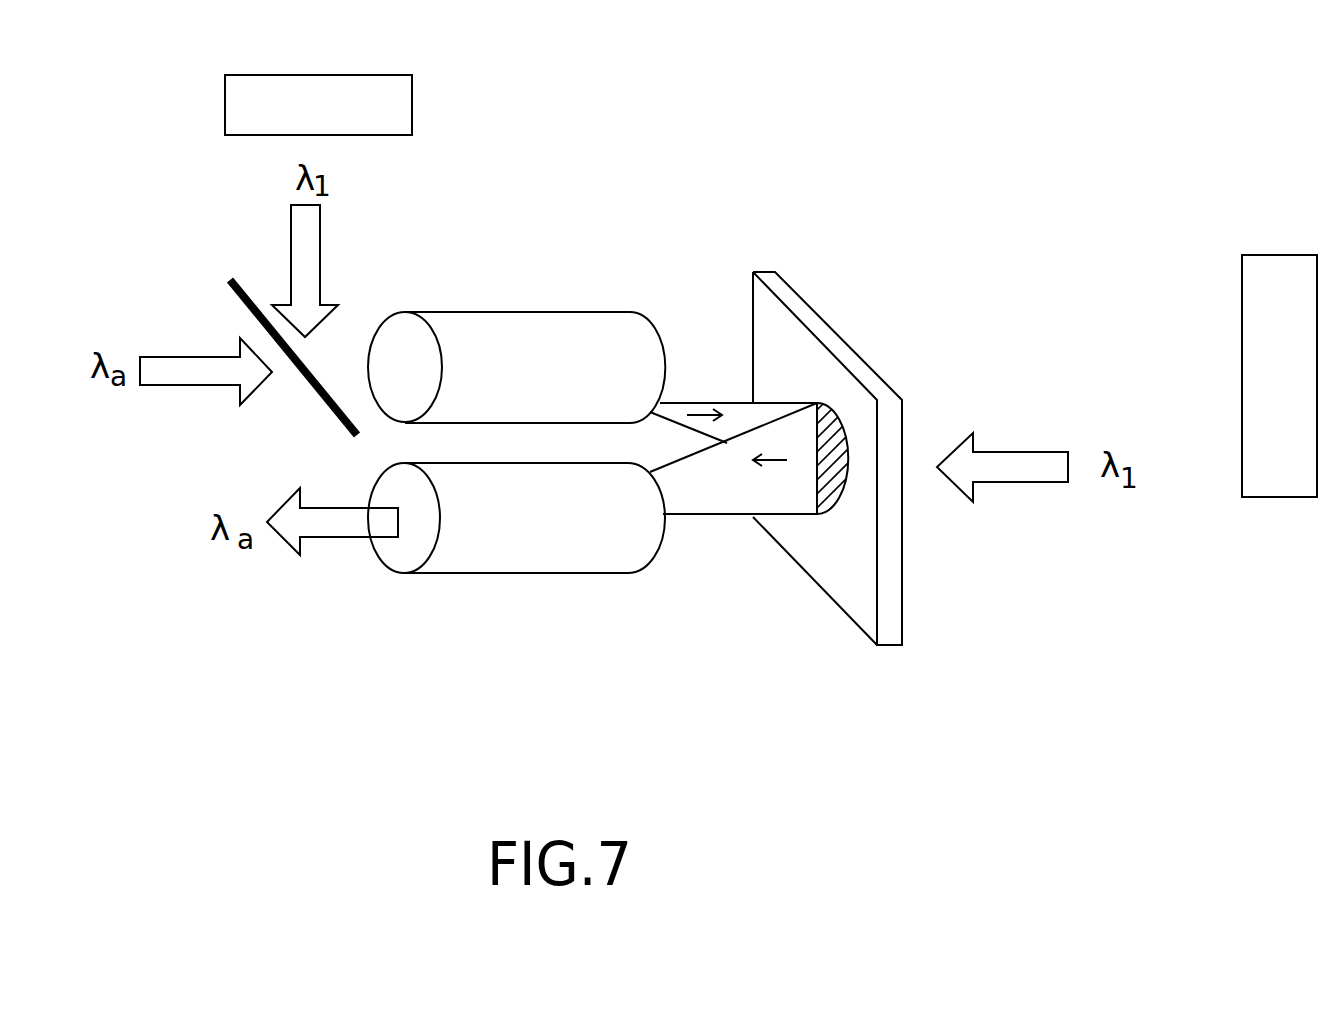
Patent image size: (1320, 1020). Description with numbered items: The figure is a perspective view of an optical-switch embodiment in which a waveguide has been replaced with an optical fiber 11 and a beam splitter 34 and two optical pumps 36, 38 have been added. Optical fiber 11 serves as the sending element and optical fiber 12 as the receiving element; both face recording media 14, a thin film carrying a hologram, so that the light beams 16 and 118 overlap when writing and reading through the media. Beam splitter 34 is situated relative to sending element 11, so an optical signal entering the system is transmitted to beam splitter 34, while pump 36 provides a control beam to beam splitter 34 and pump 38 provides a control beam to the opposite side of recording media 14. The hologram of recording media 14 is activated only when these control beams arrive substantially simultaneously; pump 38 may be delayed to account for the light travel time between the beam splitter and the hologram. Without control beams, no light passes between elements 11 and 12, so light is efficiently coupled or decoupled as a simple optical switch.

The optical fiber 11 is at (517, 317).
The optical fiber 12 is at (493, 550).
The recording media 14 is at (810, 312).
The light beam 16 is at (735, 402).
The beam splitter 34 is at (312, 377).
The optical pump 36 is at (398, 123).
The optical pump 38 is at (1300, 483).
The light beam 118 is at (727, 490).